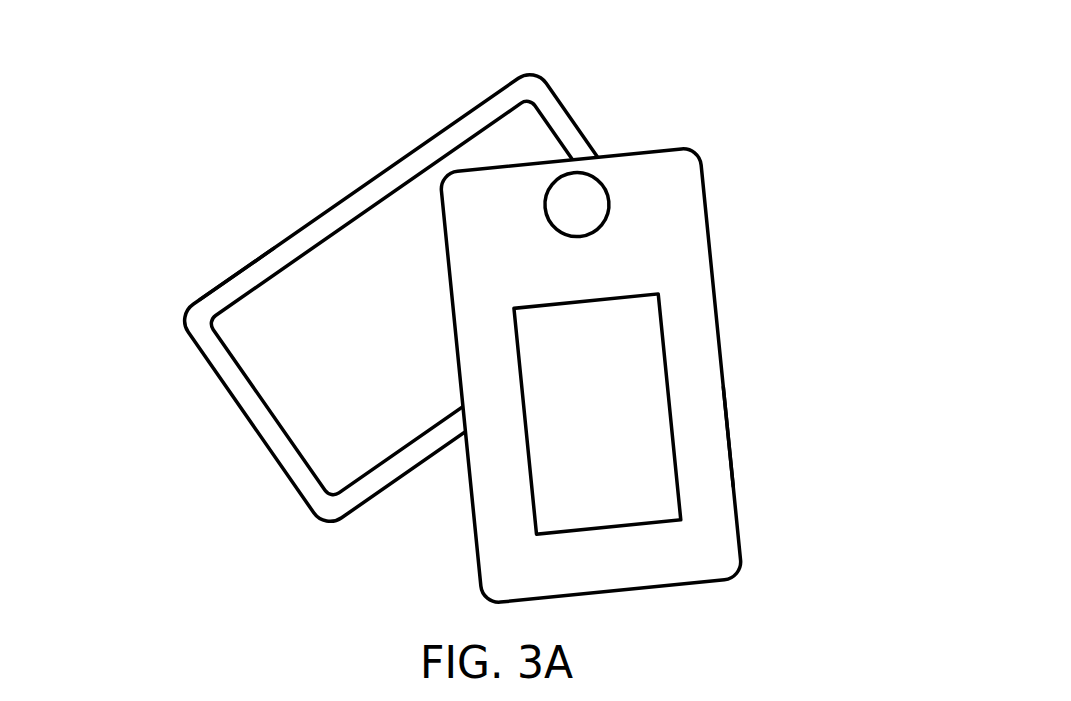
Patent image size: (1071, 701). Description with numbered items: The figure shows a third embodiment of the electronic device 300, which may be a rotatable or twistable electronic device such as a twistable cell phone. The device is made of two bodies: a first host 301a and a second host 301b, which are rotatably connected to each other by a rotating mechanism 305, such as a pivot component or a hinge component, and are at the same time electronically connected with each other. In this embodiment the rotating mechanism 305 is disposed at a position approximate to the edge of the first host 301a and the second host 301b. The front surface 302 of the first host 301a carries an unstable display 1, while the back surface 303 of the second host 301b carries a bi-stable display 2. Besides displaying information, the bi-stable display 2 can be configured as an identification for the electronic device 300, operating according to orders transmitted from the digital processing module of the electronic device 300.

The unstable display 1 is at (310, 293).
The bi-stable display 2 is at (627, 397).
The electronic device 300 is at (175, 520).
The first host 301a is at (230, 273).
The second host 301b is at (728, 448).
The front surface 302 is at (283, 253).
The back surface 303 is at (705, 421).
The rotating mechanism 305 is at (578, 198).